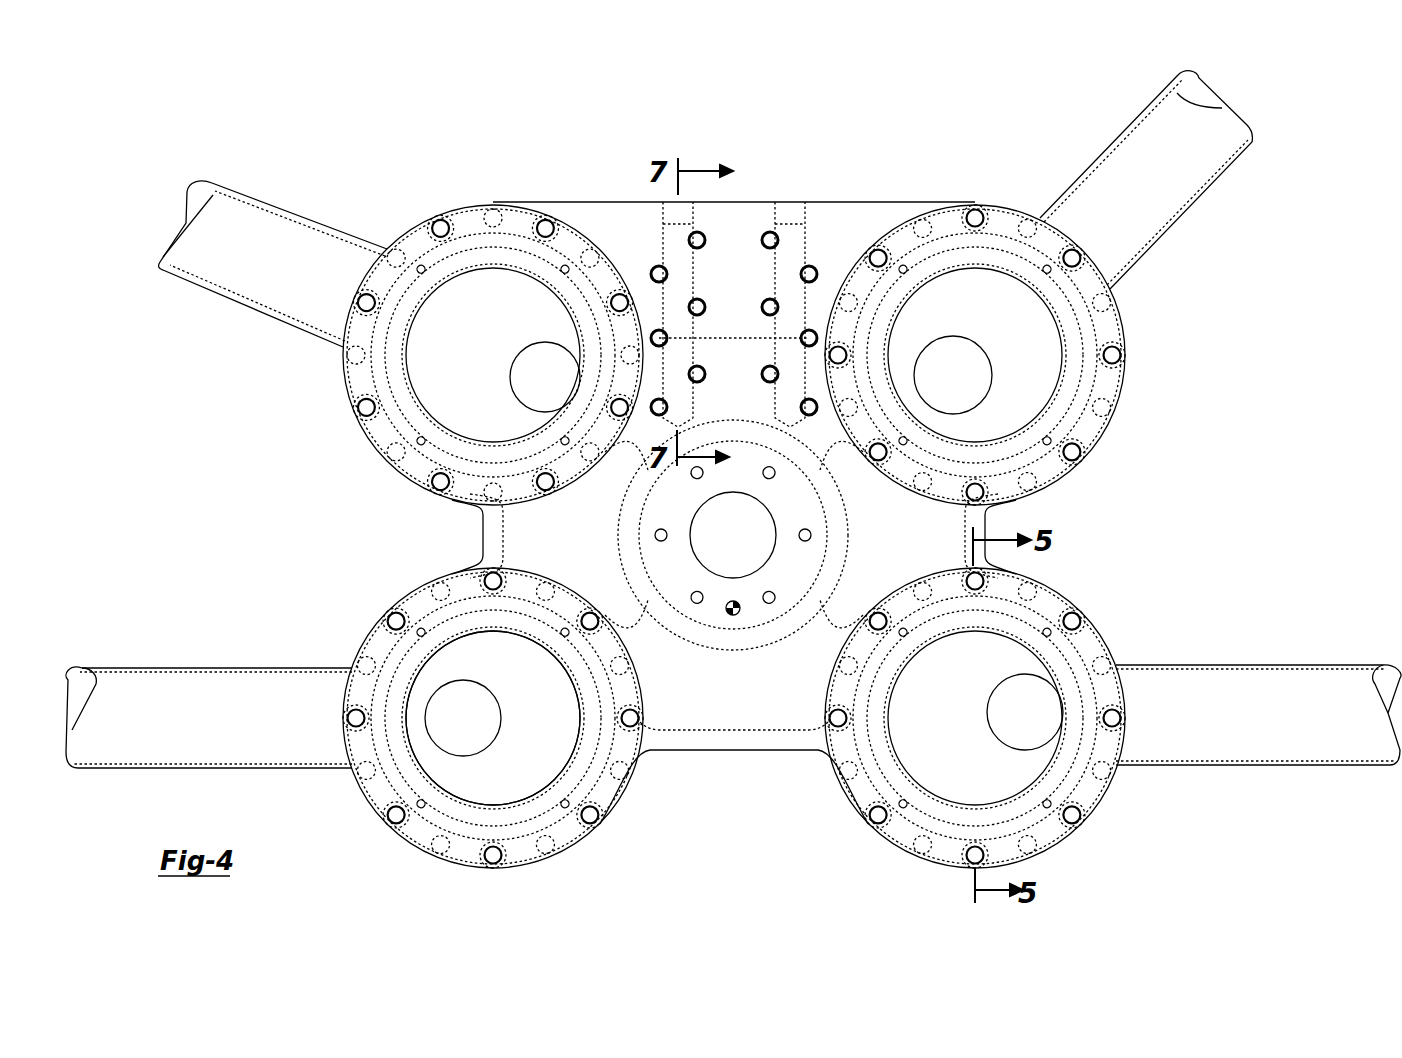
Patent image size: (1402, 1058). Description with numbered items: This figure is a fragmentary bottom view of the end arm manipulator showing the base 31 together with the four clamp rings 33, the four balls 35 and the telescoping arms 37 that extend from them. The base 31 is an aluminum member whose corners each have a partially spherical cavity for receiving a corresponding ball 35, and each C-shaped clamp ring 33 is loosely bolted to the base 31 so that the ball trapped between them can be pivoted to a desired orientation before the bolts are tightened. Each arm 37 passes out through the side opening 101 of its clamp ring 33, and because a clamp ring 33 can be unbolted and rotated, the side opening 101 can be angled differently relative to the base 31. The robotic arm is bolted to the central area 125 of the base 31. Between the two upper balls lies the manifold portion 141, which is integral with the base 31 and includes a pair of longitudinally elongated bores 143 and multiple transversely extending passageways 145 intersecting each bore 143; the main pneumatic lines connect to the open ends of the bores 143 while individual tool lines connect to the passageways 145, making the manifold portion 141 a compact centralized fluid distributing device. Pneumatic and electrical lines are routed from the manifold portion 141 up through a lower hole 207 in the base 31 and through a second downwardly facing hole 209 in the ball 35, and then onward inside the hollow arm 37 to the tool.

The base 31 is at (733, 740).
The clamp ring 33 is at (395, 395).
The ball 35 is at (488, 300).
The telescoping arm 37 is at (1243, 700).
The side opening 101 is at (1115, 613).
The central area 125 is at (748, 548).
The manifold portion 141 is at (788, 184).
The bore 143 is at (675, 242).
The passageway 145 is at (768, 238).
The lower hole 207 is at (408, 718).
The second downwardly facing hole 209 is at (445, 690).